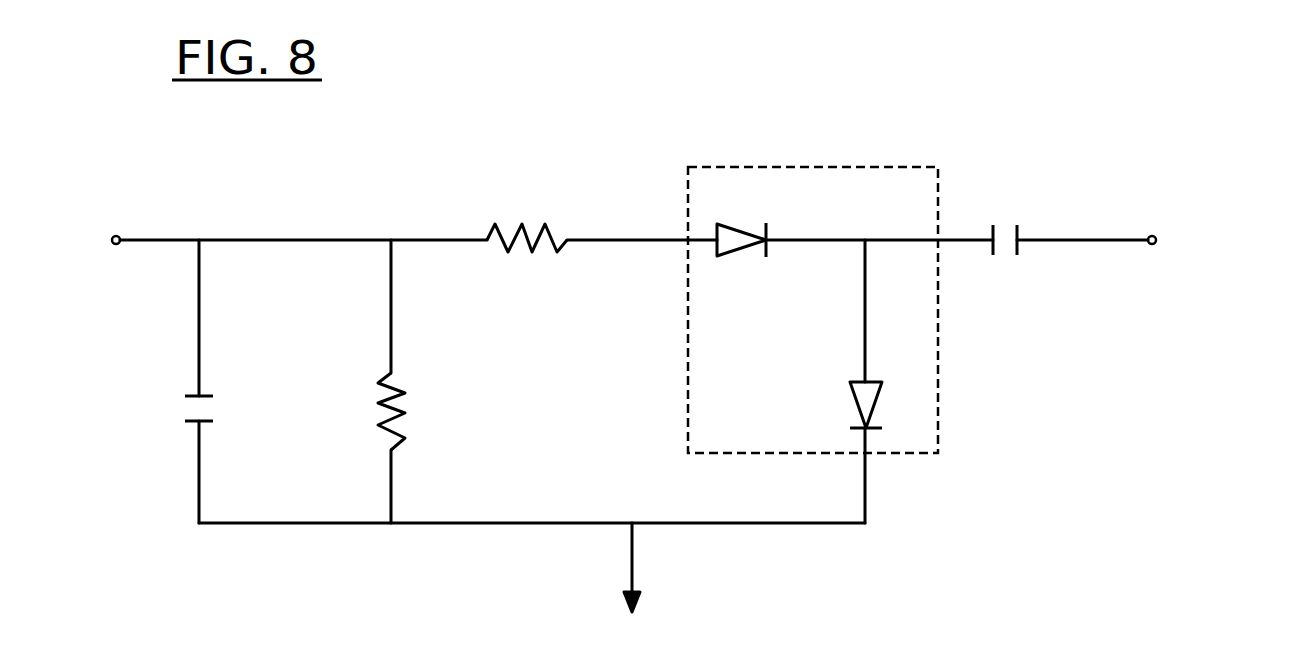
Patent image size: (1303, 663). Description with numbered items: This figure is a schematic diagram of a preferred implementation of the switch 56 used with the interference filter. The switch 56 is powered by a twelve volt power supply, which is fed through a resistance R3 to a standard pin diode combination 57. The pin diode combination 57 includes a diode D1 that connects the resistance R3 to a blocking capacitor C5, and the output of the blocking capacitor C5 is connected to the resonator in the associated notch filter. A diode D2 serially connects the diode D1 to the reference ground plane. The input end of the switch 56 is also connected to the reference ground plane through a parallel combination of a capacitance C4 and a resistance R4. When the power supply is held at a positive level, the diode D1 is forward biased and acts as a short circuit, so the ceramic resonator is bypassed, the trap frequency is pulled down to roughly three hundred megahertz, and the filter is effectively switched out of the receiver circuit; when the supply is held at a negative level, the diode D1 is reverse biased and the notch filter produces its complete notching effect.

The switch 56 is at (672, 25).
The pin diode combination 57 is at (840, 165).
The resistance R3 is at (527, 221).
The resistance R4 is at (415, 411).
The capacitance C4 is at (183, 409).
The blocking capacitor C5 is at (1006, 223).
The diode D1 is at (741, 222).
The diode D2 is at (886, 405).